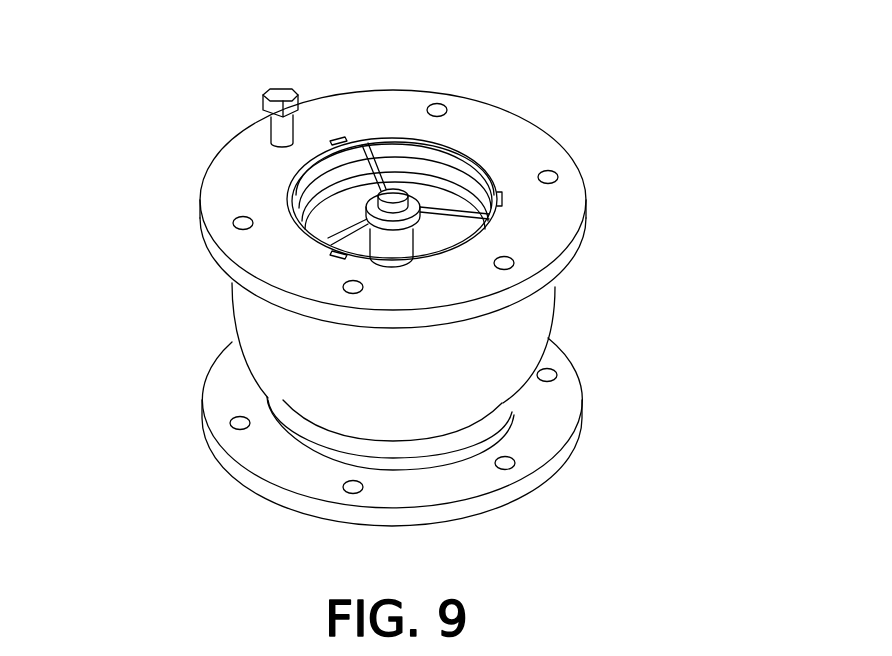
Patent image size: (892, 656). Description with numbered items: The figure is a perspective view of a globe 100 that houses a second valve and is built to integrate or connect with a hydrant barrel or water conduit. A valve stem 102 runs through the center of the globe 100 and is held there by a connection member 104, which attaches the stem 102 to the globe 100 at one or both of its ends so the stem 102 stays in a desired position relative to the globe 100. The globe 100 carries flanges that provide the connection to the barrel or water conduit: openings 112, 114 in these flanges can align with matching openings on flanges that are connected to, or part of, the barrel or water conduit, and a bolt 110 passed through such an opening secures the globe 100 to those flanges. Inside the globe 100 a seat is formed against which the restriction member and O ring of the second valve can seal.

The globe 100 is at (688, 117).
The valve stem 102 is at (392, 196).
The connection member 104 is at (462, 220).
The bolt 110 is at (262, 102).
The opening 112 is at (242, 222).
The opening 114 is at (240, 423).